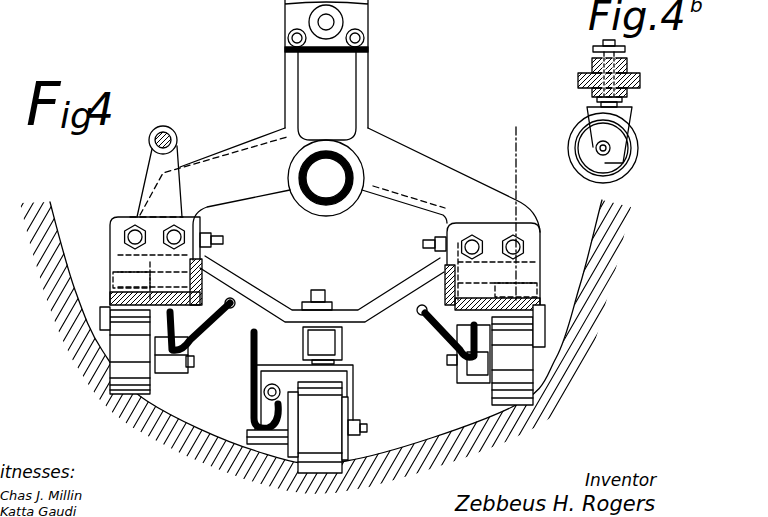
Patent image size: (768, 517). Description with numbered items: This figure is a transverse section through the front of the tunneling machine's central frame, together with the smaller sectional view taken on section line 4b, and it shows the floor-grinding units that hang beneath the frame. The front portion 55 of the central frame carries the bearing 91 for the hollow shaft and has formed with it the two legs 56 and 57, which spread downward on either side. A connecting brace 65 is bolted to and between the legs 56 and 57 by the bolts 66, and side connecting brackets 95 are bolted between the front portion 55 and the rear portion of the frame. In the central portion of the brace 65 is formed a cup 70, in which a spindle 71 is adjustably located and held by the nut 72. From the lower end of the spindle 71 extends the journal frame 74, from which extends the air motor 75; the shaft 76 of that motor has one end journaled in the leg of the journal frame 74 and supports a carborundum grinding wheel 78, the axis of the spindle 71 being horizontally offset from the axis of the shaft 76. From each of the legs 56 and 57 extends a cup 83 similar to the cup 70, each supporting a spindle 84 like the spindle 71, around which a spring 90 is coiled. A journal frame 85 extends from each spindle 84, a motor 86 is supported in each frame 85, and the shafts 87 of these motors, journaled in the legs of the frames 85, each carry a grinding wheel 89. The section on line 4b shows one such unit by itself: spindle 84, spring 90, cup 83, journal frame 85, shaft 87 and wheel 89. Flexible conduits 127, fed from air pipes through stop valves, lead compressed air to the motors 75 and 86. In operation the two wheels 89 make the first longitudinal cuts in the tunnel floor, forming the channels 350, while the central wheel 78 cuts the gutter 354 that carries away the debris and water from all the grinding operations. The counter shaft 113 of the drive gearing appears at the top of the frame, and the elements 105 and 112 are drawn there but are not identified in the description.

In FIG. 4, the section line 4b is at (512, 236).
In FIG. 4, the front portion 55 is at (326, 70).
In FIG. 4, the leg 56 is at (152, 188).
In FIG. 4, the leg 57 is at (505, 168).
In FIG. 4, the connecting brace 65 is at (368, 303).
In FIG. 4, the bolts 66 is at (226, 240).
In FIG. 4, the cup 70 is at (322, 345).
In FIG. 4, the spindle 71 is at (314, 302).
In FIG. 4, the nut 72 is at (338, 300).
In FIG. 4, the journal frame 74 is at (352, 367).
In FIG. 4, the air motor 75 is at (272, 440).
In FIG. 4, the shaft 76 is at (367, 428).
In FIG. 4, the grinding wheel 78 is at (325, 458).
In FIG. 4, the cups 83 is at (115, 278).
In FIG. 4B, the cups 83 is at (627, 90).
In FIG. 4B, the spindle 84 is at (600, 40).
In FIG. 4, the journal frame 85 is at (100, 312).
In FIG. 4B, the journal frame 85 is at (620, 122).
In FIG. 4, the motor 86 is at (180, 372).
In FIG. 4, the shafts 87 is at (194, 358).
In FIG. 4B, the shafts 87 is at (612, 148).
In FIG. 4, the grinding wheel 89 is at (128, 366).
In FIG. 4B, the grinding wheel 89 is at (570, 135).
In FIG. 4B, the springs 90 is at (590, 67).
In FIG. 4, the bearing 91 is at (355, 168).
In FIG. 4, the side connecting brackets 95 is at (112, 233).
In FIG. 4, the shaft 105 is at (438, 6).
In FIG. 4, the bolt 112 is at (322, 22).
In FIG. 4, the counter shaft 113 is at (330, 24).
In FIG. 4, the flexible conduits 127 is at (232, 308).
In FIG. 4, the channels 350 is at (147, 400).
In FIG. 4, the gutter 354 is at (340, 478).